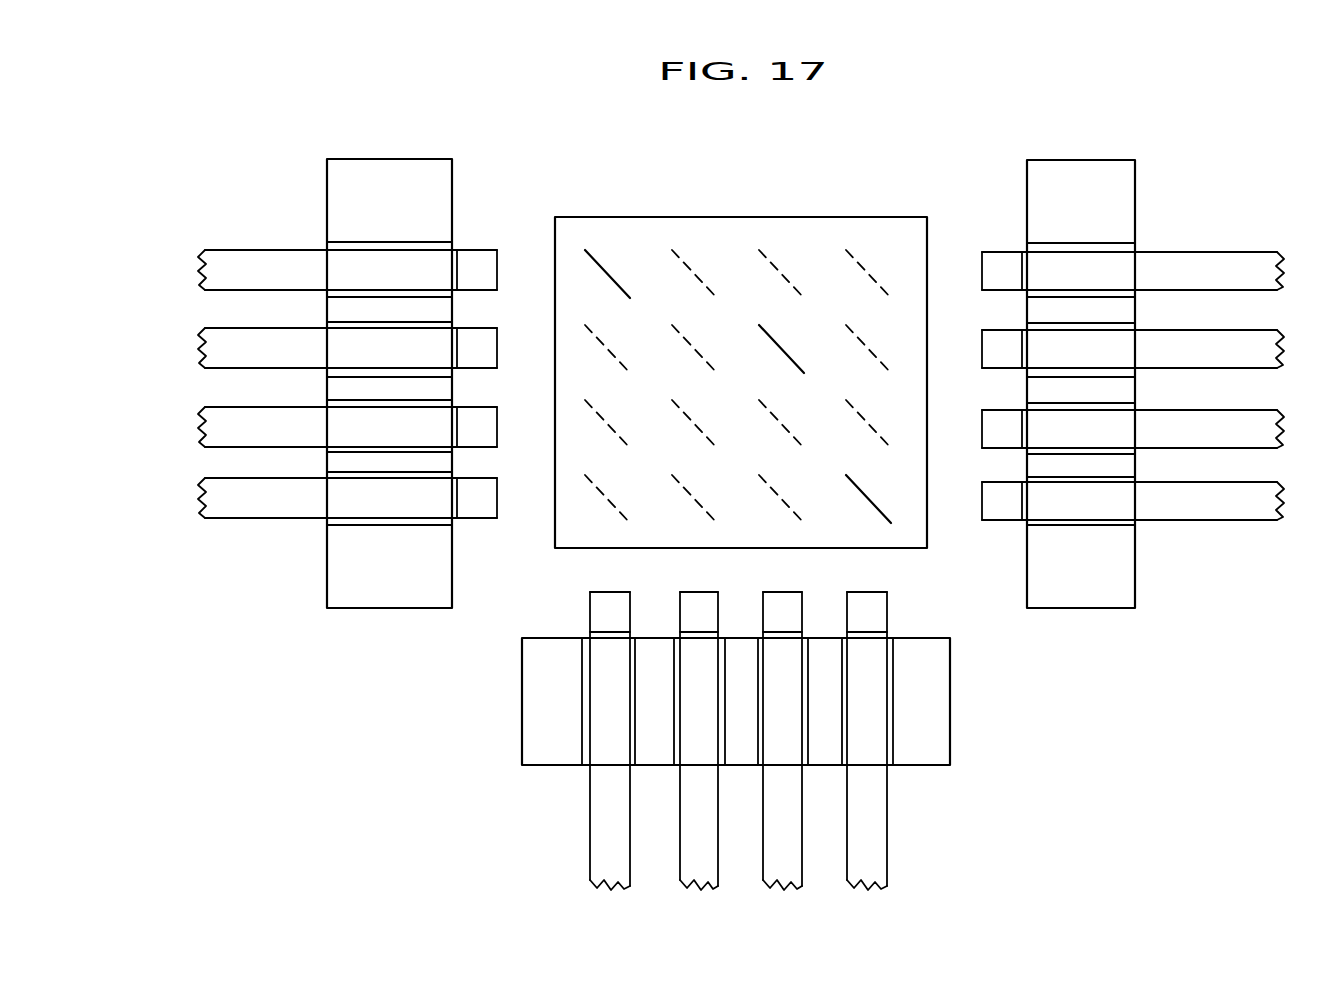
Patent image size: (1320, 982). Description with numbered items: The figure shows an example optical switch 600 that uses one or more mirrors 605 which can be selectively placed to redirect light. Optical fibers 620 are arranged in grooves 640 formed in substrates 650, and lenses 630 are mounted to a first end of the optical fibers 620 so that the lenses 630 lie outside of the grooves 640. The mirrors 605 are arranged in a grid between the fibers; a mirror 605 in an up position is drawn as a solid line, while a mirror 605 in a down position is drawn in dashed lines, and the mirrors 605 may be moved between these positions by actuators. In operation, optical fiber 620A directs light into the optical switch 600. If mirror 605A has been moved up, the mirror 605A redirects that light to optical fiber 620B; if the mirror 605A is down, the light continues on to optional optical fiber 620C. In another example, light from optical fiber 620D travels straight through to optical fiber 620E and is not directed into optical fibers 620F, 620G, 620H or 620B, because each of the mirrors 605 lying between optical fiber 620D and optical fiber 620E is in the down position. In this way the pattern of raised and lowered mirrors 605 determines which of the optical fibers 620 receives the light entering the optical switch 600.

The optical switch 600 is at (872, 166).
The mirrors 605 is at (590, 253).
The mirror 605A is at (885, 517).
The optical fibers 620 is at (410, 258).
The optical fiber 620A is at (425, 507).
The optical fiber 620B is at (867, 703).
The optional optical fiber 620C is at (1090, 507).
The optical fiber 620D is at (383, 433).
The optical fiber 620E is at (1090, 432).
The optical fiber 620F is at (598, 725).
The optical fiber 620G is at (697, 695).
The optical fiber 620H is at (790, 700).
The lenses 630 is at (472, 255).
The grooves 640 is at (338, 507).
The substrates 650 is at (402, 570).